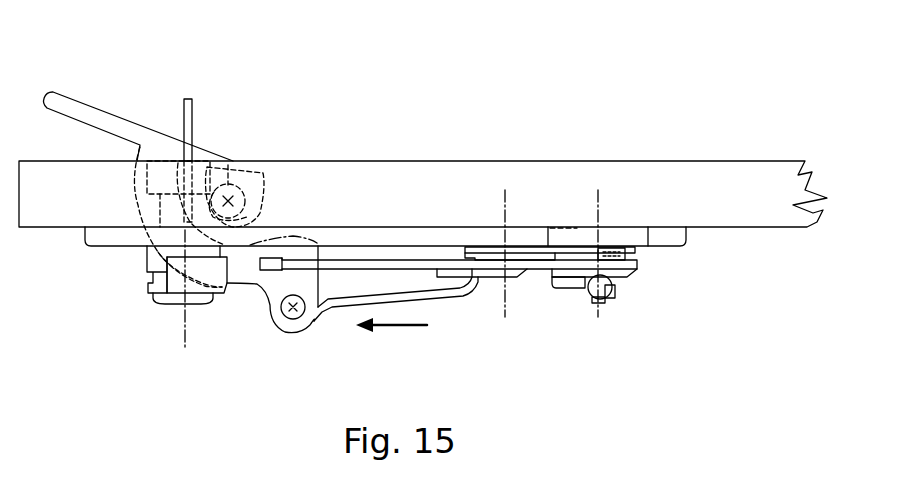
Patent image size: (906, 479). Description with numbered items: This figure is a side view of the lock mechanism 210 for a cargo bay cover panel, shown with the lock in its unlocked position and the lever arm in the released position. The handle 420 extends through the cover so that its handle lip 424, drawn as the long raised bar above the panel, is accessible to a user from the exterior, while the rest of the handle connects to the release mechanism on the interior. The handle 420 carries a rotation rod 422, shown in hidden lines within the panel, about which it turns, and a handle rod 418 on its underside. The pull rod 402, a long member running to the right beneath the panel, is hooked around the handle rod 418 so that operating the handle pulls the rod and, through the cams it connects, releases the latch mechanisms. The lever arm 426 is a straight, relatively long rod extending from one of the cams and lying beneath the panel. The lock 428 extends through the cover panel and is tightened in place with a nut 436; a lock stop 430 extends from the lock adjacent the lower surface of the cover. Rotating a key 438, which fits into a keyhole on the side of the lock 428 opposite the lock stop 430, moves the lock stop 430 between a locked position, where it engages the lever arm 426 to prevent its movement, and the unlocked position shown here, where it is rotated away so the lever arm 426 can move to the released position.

The lock mechanism 210 is at (510, 362).
The pull rod 402 is at (443, 296).
The handle rod 418 is at (303, 310).
The handle 420 is at (150, 152).
The rotation rod 422 is at (232, 198).
The handle lip 424 is at (70, 102).
The lever arm 426 is at (383, 258).
The lock 428 is at (135, 312).
The lock stop 430 is at (227, 282).
The nut 436 is at (147, 262).
The key 438 is at (193, 107).